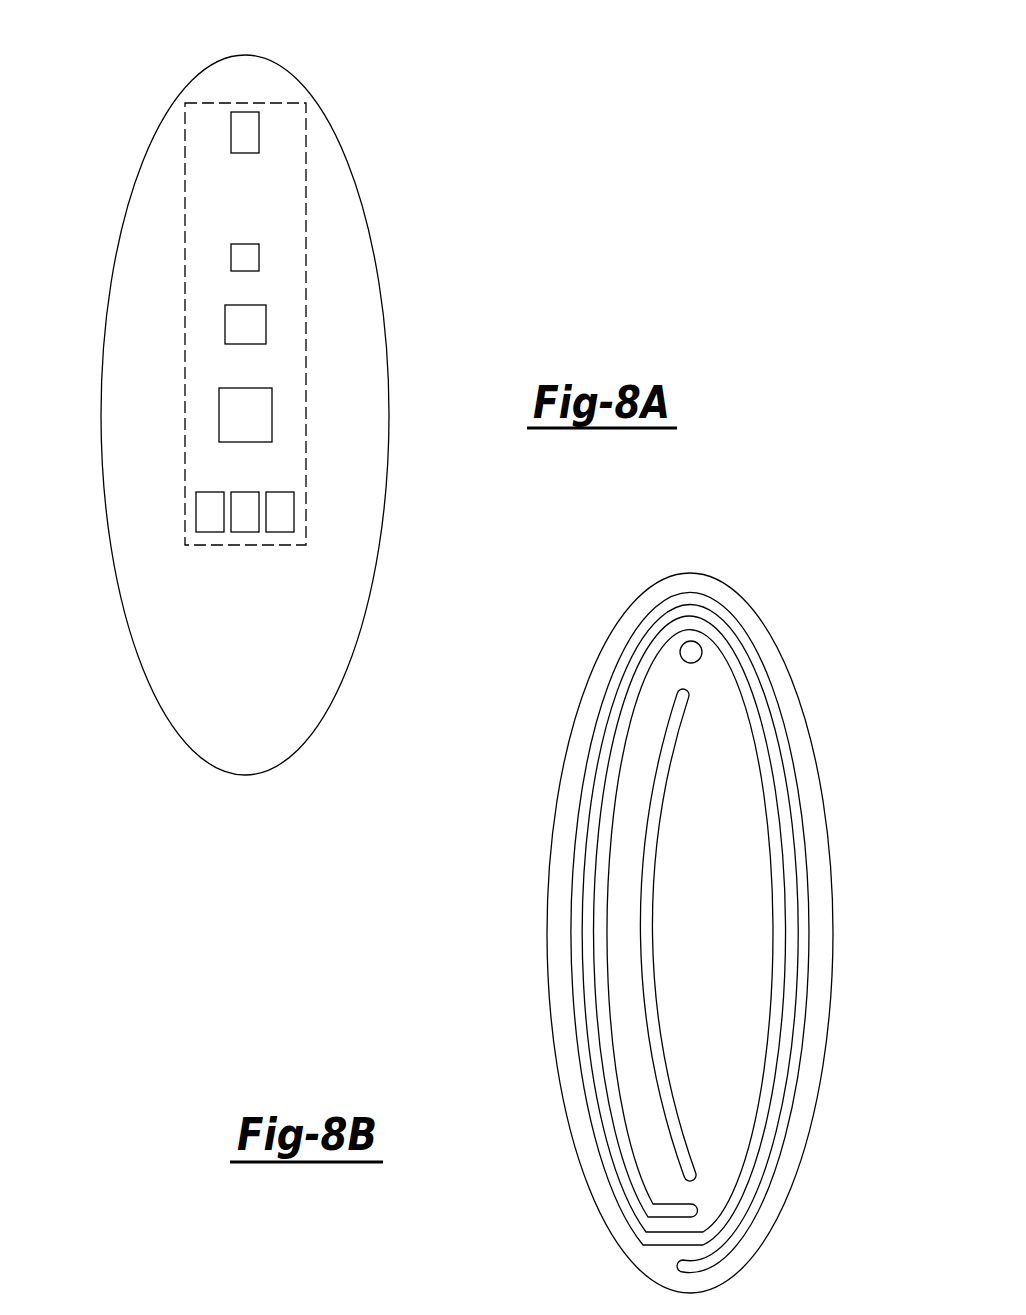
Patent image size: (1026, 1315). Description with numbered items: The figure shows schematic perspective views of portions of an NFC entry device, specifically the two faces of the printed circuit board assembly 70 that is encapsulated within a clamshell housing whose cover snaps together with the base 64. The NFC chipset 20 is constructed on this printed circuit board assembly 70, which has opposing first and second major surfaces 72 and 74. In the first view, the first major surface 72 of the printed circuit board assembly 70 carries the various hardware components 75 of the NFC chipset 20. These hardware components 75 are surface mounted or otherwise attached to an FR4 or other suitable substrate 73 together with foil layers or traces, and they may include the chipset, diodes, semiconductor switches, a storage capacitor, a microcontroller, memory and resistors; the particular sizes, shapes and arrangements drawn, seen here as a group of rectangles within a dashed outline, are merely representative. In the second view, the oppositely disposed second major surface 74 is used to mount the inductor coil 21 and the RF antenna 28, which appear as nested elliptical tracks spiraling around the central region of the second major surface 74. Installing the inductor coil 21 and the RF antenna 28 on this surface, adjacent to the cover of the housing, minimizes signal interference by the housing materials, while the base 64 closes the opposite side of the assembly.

In FIG. 8A, the NFC chipset 20 is at (305, 57).
In FIG. 8B, the NFC chipset 20 is at (780, 562).
In FIG. 8B, the inductor coil 21 is at (812, 900).
In FIG. 8B, the RF antenna 28 is at (640, 912).
In FIG. 8A, the base 64 is at (155, 742).
In FIG. 8B, the base 64 is at (813, 1178).
In FIG. 8A, the printed circuit board assembly 70 is at (80, 347).
In FIG. 8A, the first major surface 72 is at (300, 588).
In FIG. 8A, the substrate 73 is at (337, 693).
In FIG. 8B, the second major surface 74 is at (726, 936).
In FIG. 8A, the hardware components 75 is at (306, 207).